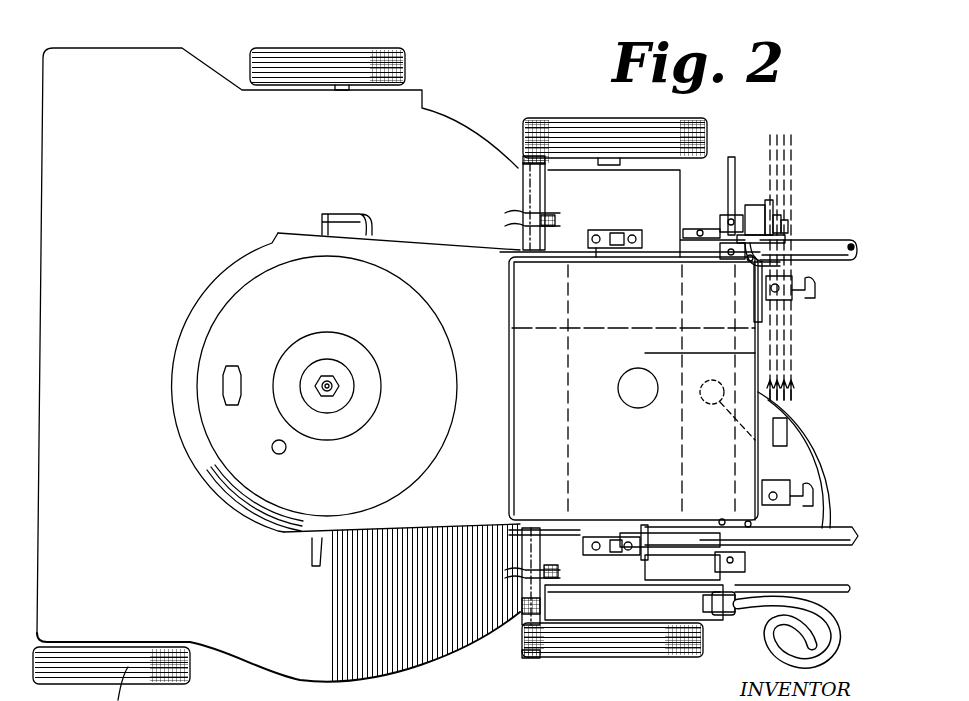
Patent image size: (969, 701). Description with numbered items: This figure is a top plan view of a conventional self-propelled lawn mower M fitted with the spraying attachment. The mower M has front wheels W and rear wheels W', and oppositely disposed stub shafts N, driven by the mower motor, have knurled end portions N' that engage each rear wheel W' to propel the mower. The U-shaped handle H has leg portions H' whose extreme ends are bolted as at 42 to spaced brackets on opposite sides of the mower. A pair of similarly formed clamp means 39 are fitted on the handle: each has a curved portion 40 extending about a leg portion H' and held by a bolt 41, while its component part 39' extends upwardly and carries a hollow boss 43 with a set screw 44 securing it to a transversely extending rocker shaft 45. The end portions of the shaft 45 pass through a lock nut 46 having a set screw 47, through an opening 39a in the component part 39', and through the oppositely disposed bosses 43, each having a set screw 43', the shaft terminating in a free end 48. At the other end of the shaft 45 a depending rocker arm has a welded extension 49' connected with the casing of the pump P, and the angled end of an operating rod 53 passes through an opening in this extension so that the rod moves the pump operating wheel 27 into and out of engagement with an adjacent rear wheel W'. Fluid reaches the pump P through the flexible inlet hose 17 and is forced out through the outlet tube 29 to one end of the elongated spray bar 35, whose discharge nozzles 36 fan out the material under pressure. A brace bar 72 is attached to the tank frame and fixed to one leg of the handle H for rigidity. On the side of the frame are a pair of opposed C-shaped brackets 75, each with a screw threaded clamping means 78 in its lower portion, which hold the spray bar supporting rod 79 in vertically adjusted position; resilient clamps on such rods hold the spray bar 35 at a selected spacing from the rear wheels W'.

The lawn mower M is at (484, 118).
The front wheels W is at (219, 357).
The rear wheels W' is at (615, 127).
The stub shafts N is at (513, 394).
The knurled end portions N' is at (504, 377).
The pump P is at (540, 600).
The handle means H is at (808, 230).
The leg portions of the handle H' is at (749, 403).
The flexible inlet hose 17 is at (772, 444).
The pump operating wheel 27 is at (597, 648).
The outlet tube 29 is at (765, 632).
The spray bar 35 is at (770, 208).
The discharge nozzles 36 is at (790, 226).
The clamp means 39 is at (706, 391).
The component part of clamp means 39' is at (802, 202).
The opening in component part 39a is at (725, 232).
The curved portion of clamp means 40 is at (770, 252).
The bolt 41 is at (752, 212).
The handle end bolting 42 is at (606, 230).
The hollow boss 43 is at (671, 396).
The set screw of boss 43' is at (698, 563).
The set screw 44 is at (728, 216).
The rocker shaft 45 is at (780, 150).
The lock nut 46 is at (700, 258).
The set screw of lock nut 47 is at (735, 258).
The free end of shaft 48 is at (733, 158).
The welded extension of rocker arm 49' is at (781, 607).
The operating rod 53 is at (838, 586).
The brace bar 72 is at (818, 468).
The C-shaped brackets 75 is at (758, 312).
The clamping means 78 is at (814, 292).
The spray bar supporting rod 79 is at (792, 292).